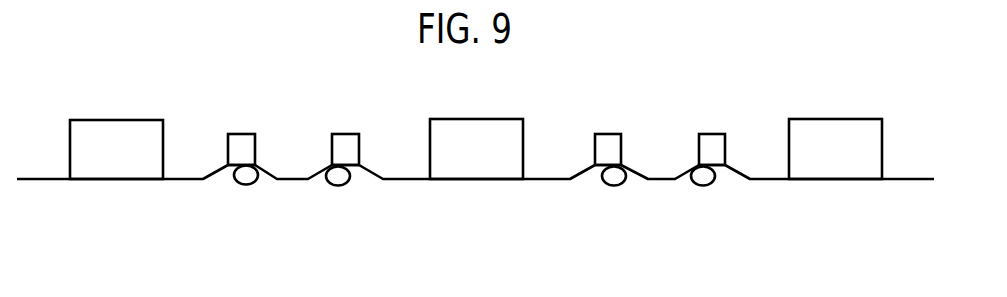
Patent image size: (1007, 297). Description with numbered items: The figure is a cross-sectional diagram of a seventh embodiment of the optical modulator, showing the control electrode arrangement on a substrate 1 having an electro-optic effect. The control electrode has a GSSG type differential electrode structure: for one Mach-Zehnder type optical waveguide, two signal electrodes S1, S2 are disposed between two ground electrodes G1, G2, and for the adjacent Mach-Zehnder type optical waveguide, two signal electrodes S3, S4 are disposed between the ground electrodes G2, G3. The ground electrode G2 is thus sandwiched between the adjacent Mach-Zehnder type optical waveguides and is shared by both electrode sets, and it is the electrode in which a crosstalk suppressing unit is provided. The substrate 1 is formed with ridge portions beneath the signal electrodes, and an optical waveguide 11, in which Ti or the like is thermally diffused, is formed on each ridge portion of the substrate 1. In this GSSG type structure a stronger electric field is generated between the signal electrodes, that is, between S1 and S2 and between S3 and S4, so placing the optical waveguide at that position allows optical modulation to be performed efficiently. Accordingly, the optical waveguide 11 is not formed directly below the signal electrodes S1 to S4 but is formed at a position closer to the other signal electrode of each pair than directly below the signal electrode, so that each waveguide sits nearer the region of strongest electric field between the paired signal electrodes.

The substrate 1 is at (123, 230).
The optical waveguide 11 is at (245, 172).
The ground electrode G1 is at (116, 128).
The ground electrode G2 is at (476, 128).
The ground electrode G3 is at (835, 128).
The signal electrode S1 is at (241, 130).
The signal electrode S2 is at (342, 140).
The signal electrode S3 is at (609, 139).
The signal electrode S4 is at (708, 139).